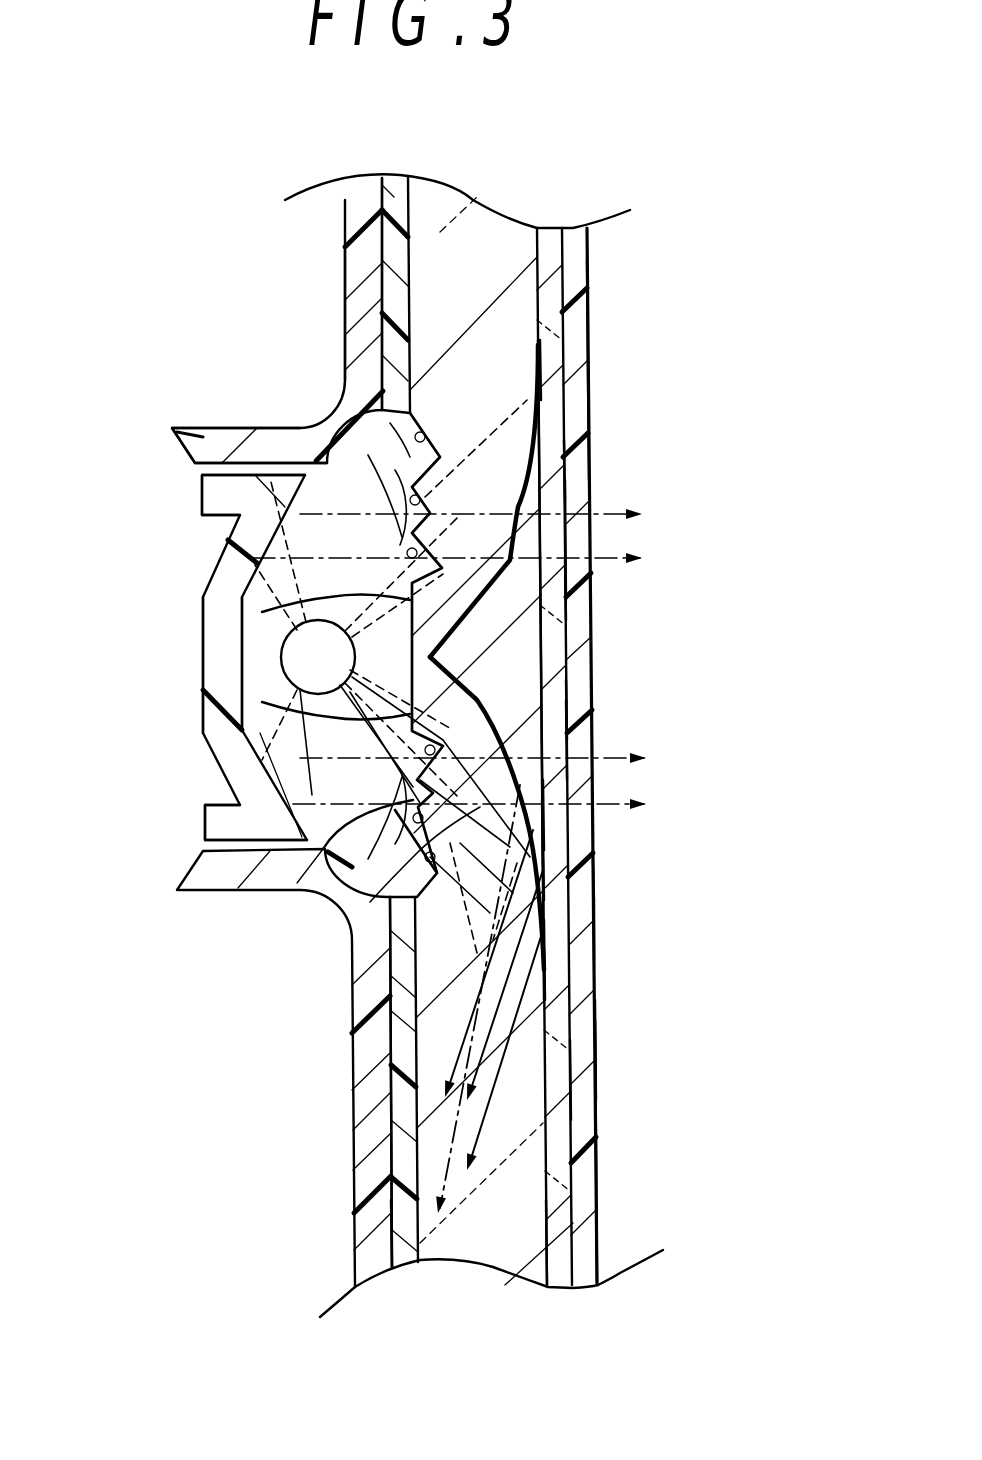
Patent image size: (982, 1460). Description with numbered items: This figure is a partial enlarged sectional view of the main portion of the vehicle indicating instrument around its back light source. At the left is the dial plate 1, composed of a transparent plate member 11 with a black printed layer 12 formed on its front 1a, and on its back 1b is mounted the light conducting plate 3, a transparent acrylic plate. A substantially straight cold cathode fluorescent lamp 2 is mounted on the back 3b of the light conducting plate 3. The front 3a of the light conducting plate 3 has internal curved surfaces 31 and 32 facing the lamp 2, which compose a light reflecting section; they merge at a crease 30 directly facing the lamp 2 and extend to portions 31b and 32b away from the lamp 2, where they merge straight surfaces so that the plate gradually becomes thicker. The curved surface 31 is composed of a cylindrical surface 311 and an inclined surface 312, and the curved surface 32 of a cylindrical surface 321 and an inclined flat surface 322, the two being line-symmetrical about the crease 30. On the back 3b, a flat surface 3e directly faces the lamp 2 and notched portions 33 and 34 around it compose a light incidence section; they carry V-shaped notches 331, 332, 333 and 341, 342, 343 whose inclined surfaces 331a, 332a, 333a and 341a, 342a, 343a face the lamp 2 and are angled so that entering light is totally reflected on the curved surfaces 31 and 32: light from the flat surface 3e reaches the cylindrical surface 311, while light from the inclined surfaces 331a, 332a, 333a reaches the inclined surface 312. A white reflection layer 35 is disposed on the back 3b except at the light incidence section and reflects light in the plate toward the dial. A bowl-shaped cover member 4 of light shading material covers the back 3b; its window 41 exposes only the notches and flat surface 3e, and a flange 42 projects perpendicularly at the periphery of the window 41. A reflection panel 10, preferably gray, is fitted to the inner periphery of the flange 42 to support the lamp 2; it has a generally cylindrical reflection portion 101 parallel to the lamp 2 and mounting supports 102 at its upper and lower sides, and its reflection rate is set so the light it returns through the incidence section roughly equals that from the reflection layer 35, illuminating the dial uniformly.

The dial plate 1 is at (603, 1178).
The front of the dial plate 1a is at (601, 932).
The back of the dial plate 1b is at (601, 903).
The plate member 11 is at (558, 1089).
The black printed layer 12 is at (595, 1052).
The cold cathode fluorescent lamp 2 is at (307, 665).
The light conducting plate 3 is at (510, 273).
The front of the light conducting plate 3a is at (548, 1223).
The back of the light conducting plate 3b is at (420, 1235).
The flat surface 3e is at (262, 612).
The crease 30 is at (440, 657).
The curved surface 31 is at (532, 478).
The cylindrical surface 311 is at (560, 537).
The inclined surface 312 is at (588, 437).
The portion away from the lamp 31b is at (588, 327).
The curved surface 32 is at (497, 708).
The cylindrical surface 321 is at (672, 740).
The inclined flat surface 322 is at (542, 834).
The portion away from the lamp 32b is at (545, 963).
The notched portion 33 is at (373, 497).
The notch 331 is at (400, 507).
The notch 332 is at (413, 507).
The notch 333 is at (383, 427).
The inclined surface 331a is at (420, 583).
The inclined surface 332a is at (433, 510).
The inclined surface 333a is at (428, 428).
The notched portion 34 is at (372, 780).
The notch 341 is at (425, 760).
The notch 342 is at (327, 853).
The notch 343 is at (390, 913).
The inclined surface 341a is at (437, 730).
The inclined surface 342a is at (544, 828).
The inclined surface 343a is at (543, 867).
The white reflection layer 35 is at (390, 287).
The cover member 4 is at (357, 210).
The window 41 is at (383, 507).
The flange 42 is at (203, 437).
The reflection panel 10 is at (213, 552).
The reflection portion 101 is at (212, 635).
The mounting supports 102 is at (212, 500).